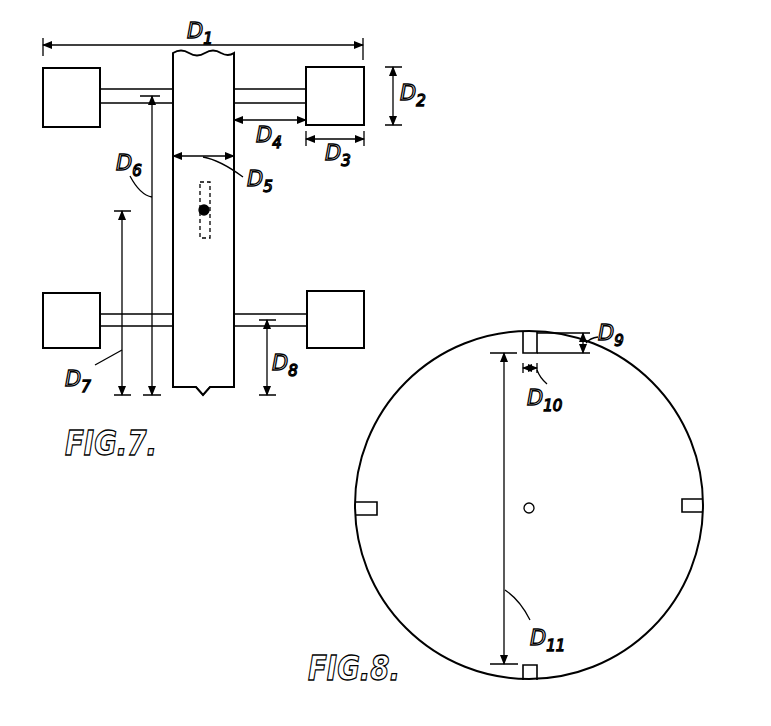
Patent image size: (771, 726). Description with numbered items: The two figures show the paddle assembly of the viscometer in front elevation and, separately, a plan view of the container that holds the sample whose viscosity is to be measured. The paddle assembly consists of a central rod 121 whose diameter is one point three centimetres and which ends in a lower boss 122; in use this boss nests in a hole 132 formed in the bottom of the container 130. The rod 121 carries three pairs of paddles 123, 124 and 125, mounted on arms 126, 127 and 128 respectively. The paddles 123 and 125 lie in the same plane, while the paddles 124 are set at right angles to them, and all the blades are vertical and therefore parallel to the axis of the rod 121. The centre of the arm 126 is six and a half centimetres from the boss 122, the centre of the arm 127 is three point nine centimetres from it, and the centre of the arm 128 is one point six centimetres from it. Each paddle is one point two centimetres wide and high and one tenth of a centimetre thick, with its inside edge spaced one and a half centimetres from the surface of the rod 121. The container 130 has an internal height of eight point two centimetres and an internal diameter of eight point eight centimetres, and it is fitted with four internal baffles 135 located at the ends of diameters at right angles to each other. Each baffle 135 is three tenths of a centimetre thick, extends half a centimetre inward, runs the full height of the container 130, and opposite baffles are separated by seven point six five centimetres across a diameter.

In FIG. 7, the central rod 121 is at (234, 268).
In FIG. 7, the lower boss 122 is at (208, 394).
In FIG. 7, the paddles 123 is at (366, 70).
In FIG. 7, the paddles 124 is at (212, 226).
In FIG. 7, the paddles 125 is at (358, 313).
In FIG. 7, the arm 126 is at (272, 93).
In FIG. 7, the arm 127 is at (210, 211).
In FIG. 7, the arm 128 is at (253, 319).
In FIG. 8, the container 130 is at (660, 392).
In FIG. 8, the hole 132 is at (534, 504).
In FIG. 8, the internal baffles 135 is at (688, 512).